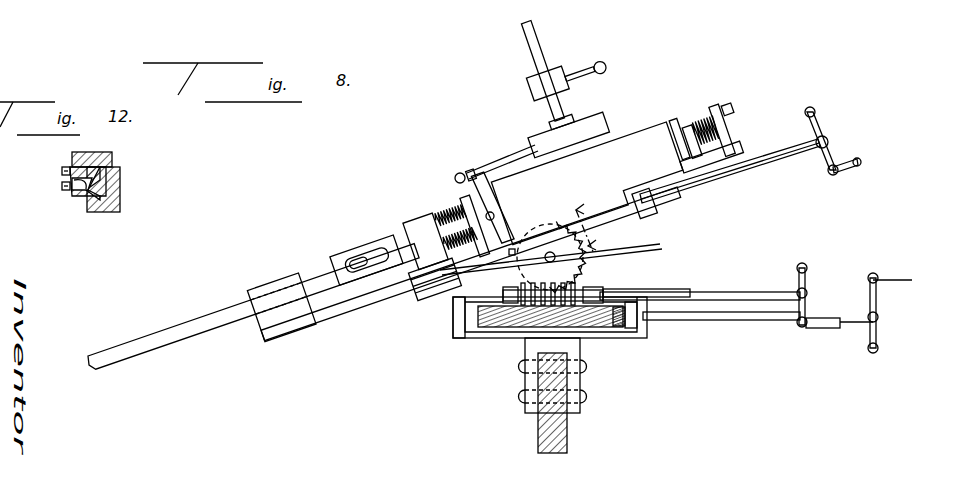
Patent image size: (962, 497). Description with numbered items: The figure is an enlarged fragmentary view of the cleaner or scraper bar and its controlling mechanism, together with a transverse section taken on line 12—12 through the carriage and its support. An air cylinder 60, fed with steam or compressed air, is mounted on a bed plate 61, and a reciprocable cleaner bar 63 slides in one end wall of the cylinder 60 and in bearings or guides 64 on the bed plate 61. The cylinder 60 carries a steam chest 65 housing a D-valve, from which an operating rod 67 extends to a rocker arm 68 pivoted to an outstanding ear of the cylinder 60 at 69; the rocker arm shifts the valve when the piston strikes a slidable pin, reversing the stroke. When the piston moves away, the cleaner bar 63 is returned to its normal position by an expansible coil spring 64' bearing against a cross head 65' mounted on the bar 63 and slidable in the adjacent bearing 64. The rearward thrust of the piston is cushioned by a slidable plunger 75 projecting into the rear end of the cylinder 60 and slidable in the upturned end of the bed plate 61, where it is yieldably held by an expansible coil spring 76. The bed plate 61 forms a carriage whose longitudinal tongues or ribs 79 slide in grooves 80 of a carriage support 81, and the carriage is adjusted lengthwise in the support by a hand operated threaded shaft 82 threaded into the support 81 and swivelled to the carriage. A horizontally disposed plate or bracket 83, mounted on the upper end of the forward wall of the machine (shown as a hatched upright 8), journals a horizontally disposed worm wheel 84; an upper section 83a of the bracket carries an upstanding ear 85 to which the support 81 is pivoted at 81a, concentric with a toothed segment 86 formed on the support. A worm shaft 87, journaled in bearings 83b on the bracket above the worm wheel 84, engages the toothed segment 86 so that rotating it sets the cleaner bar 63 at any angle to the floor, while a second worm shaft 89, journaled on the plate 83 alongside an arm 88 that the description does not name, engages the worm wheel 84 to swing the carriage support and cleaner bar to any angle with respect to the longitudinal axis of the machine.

In FIG. 8, the post 8 is at (546, 424).
In FIG. 8, the section line 12 is at (598, 221).
In FIG. 8, the air cylinder 60 is at (668, 124).
In FIG. 12, the bed plate 61 is at (100, 153).
In FIG. 8, the bed plate 61 is at (375, 304).
In FIG. 8, the cleaner bar 63 is at (221, 328).
In FIG. 8, the bearings or guides 64 is at (348, 263).
In FIG. 8, the expansible coil spring 64' is at (446, 199).
In FIG. 8, the steam chest 65 is at (579, 79).
In FIG. 8, the cross head 65' is at (469, 188).
In FIG. 8, the operating rod 67 is at (492, 160).
In FIG. 8, the rocker arm 68 is at (470, 172).
In FIG. 8, the pivot 69 is at (503, 209).
In FIG. 8, the slidable plunger 75 is at (734, 122).
In FIG. 8, the expansible coil spring 76 is at (724, 118).
In FIG. 12, the longitudinal tongues or ribs 79 is at (63, 186).
In FIG. 12, the grooves 80 is at (78, 194).
In FIG. 8, the grooves 80 is at (671, 209).
In FIG. 12, the carriage support 81 is at (105, 212).
In FIG. 8, the carriage support 81 is at (426, 306).
In FIG. 8, the pivot 81a is at (628, 249).
In FIG. 8, the hand operated threaded shaft 82 is at (762, 167).
In FIG. 8, the plate or bracket 83 is at (608, 345).
In FIG. 8, the upper bracket section 83a is at (462, 335).
In FIG. 8, the base block 83b is at (668, 332).
In FIG. 8, the worm wheel 84 is at (628, 334).
In FIG. 8, the upstanding ear 85 is at (523, 352).
In FIG. 8, the toothed segment 86 is at (556, 246).
In FIG. 8, the worm shaft 87 is at (645, 288).
In FIG. 8, the upper arm 88 is at (724, 289).
In FIG. 8, the worm shaft 89 is at (745, 318).